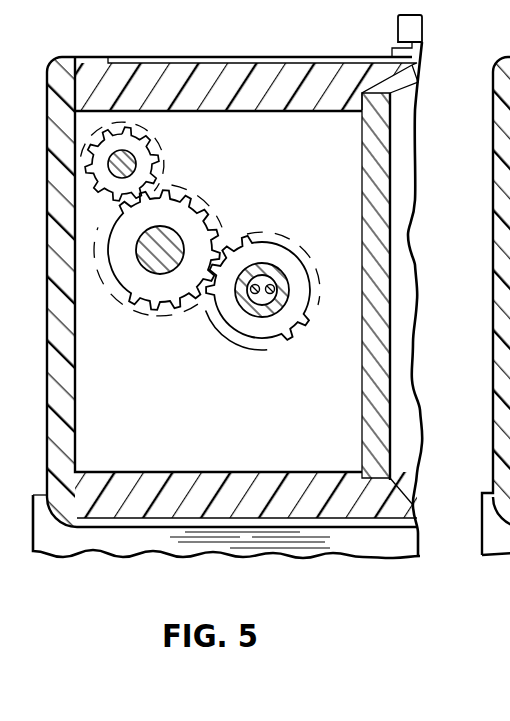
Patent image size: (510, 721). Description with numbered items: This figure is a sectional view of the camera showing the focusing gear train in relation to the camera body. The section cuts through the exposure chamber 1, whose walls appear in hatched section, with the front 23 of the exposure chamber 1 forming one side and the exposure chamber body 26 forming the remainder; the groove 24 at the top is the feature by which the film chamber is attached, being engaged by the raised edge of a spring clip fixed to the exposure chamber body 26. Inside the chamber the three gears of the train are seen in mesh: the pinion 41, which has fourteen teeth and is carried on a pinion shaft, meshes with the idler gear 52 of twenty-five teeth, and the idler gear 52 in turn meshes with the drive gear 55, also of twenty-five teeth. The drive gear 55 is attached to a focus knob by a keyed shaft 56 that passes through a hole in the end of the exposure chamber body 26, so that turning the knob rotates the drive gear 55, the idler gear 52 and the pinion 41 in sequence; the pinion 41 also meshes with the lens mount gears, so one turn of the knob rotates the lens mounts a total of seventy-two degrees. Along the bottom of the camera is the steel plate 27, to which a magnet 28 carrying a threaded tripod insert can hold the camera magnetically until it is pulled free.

The exposure chamber 1 is at (351, 575).
The front 23 is at (395, 103).
The groove 24 is at (424, 31).
The exposure chamber body 26 is at (193, 73).
The steel plate 27 is at (298, 522).
The magnet 28 is at (129, 549).
The pinion 41 is at (147, 161).
The idler gear 52 is at (208, 231).
The drive gear 55 is at (223, 300).
The keyed shaft 56 is at (275, 268).